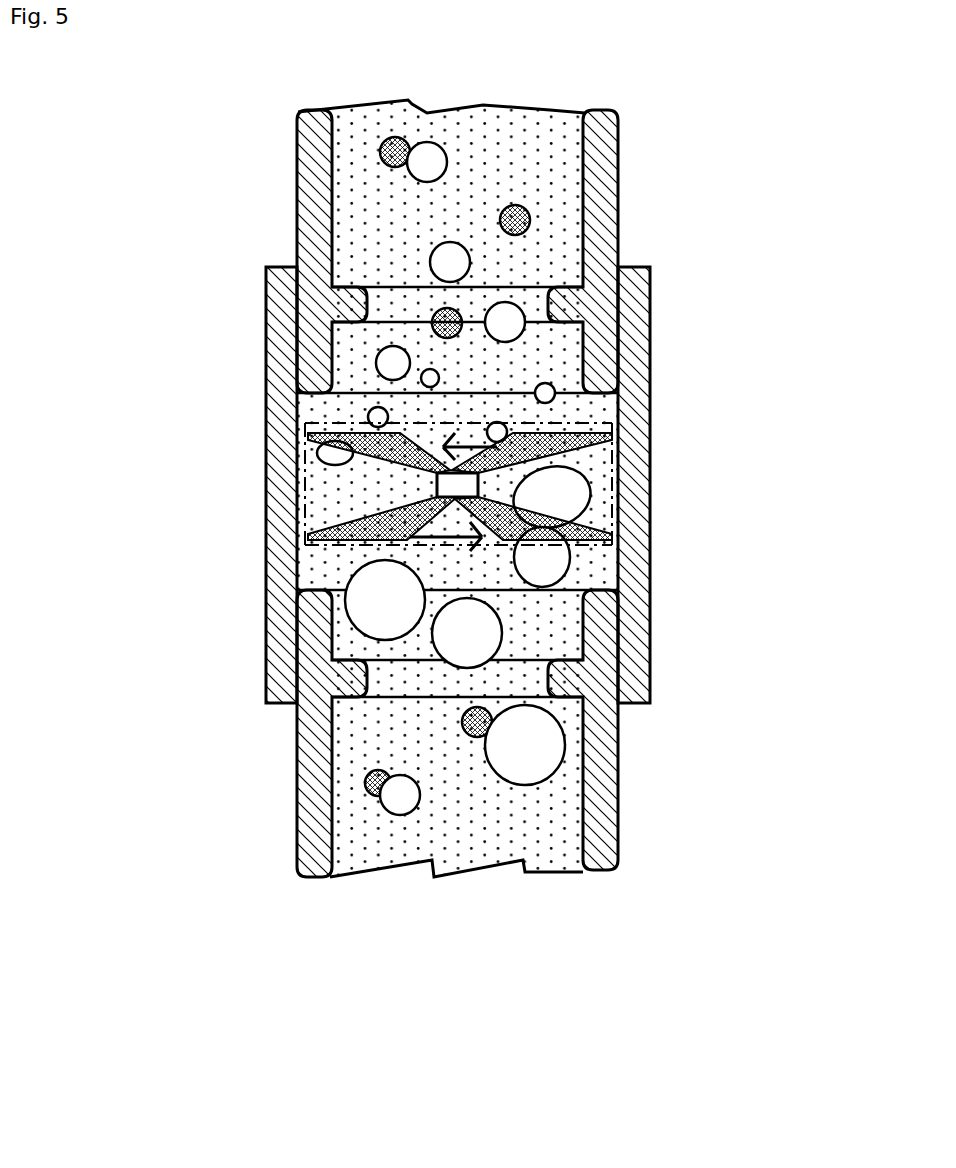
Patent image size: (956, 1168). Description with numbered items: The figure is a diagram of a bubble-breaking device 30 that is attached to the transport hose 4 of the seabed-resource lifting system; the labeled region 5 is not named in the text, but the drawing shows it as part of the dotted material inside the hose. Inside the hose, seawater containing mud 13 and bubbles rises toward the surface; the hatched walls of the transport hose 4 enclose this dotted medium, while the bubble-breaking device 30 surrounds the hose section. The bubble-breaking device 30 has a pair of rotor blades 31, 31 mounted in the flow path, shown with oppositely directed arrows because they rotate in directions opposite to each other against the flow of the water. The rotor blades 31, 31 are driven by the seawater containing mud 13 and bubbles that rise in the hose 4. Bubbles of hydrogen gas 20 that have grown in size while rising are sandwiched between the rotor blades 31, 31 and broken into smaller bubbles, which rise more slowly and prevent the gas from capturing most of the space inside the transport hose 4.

The transport hose 4 is at (297, 183).
The granular medium 5 is at (517, 833).
The mud 13 is at (365, 778).
The hydrogen gas 20 is at (353, 568).
The bubble-breaking device 30 is at (690, 372).
The rotor blades 31 is at (357, 515).